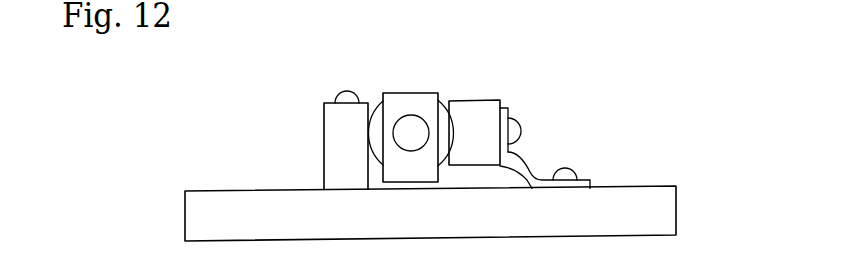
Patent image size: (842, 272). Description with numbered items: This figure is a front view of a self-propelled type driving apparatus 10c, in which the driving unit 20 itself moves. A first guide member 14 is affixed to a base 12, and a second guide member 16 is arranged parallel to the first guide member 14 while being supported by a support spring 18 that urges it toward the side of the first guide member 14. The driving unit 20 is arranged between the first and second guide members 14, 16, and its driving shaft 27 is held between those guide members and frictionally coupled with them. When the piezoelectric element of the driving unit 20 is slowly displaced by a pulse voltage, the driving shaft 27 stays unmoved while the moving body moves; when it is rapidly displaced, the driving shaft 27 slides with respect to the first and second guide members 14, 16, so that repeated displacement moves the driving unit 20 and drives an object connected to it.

The self-propelled type driving apparatus 10c is at (628, 97).
The base 12 is at (677, 208).
The first guide member 14 is at (323, 142).
The second guide member 16 is at (482, 100).
The support spring 18 is at (530, 155).
The driving unit 20 is at (408, 93).
The driving shaft 27 is at (378, 100).